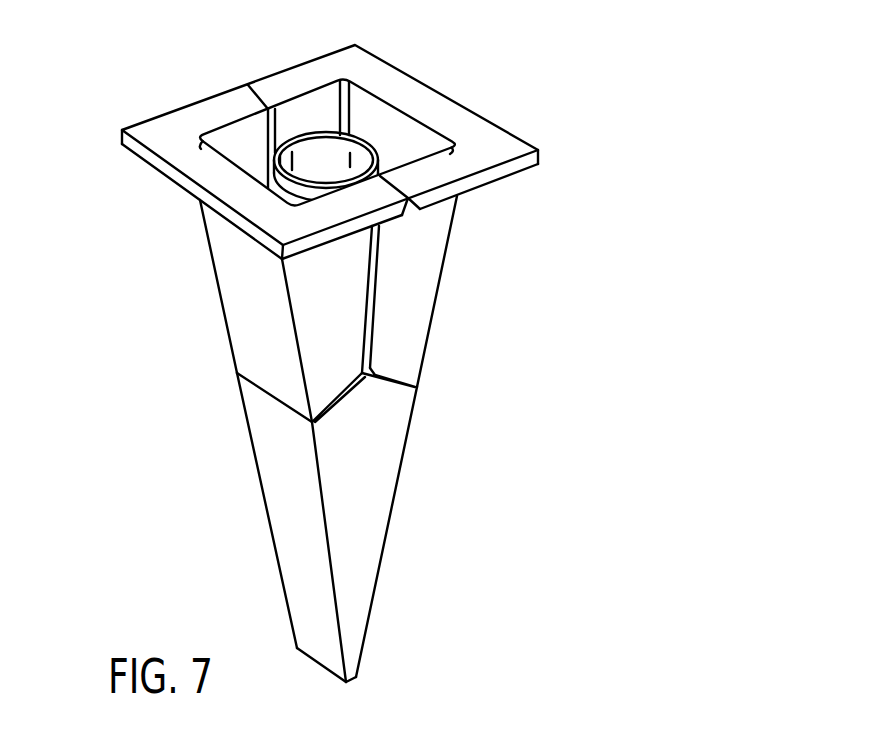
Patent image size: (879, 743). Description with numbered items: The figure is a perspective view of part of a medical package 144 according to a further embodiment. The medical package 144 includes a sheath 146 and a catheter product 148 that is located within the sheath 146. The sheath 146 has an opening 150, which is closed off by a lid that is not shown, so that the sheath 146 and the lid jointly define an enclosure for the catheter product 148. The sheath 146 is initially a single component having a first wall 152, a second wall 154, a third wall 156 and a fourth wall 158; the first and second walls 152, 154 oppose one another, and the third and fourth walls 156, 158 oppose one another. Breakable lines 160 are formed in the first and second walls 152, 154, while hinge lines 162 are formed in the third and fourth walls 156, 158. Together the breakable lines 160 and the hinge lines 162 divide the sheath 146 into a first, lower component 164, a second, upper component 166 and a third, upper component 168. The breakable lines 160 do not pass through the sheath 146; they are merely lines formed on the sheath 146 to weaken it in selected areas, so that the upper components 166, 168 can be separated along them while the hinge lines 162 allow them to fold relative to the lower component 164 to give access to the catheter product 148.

The medical package 144 is at (108, 88).
The sheath 146 is at (117, 338).
The catheter product 148 is at (334, 150).
The opening 150 is at (432, 142).
The first wall 152 is at (372, 441).
The second wall 154 is at (207, 380).
The third wall 156 is at (298, 511).
The fourth wall 158 is at (449, 346).
The breakable lines 160 is at (375, 289).
The hinge lines 162 is at (278, 405).
The first, lower component 164 is at (378, 515).
The second, upper component 166 is at (474, 232).
The third, upper component 168 is at (233, 276).